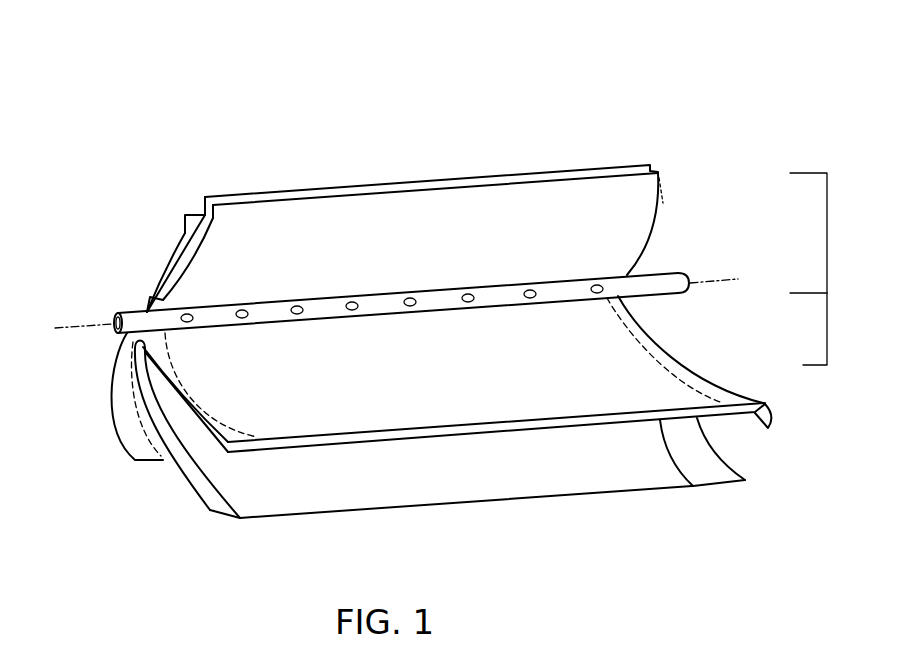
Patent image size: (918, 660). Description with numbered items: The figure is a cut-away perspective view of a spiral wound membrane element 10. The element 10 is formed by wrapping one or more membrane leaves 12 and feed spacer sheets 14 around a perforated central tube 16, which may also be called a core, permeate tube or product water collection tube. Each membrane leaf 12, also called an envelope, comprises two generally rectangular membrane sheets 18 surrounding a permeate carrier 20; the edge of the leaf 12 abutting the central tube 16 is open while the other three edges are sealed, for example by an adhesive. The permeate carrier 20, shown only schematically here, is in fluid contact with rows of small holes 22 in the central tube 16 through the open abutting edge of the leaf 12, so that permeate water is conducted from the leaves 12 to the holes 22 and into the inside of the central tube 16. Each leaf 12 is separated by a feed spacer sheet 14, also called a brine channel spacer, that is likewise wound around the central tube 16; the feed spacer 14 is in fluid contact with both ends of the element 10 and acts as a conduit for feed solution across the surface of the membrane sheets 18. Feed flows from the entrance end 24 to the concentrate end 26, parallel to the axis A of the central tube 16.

The spiral wound membrane element 10 is at (517, 105).
The membrane leaf 12 is at (827, 268).
The feed spacer sheet 14 is at (302, 192).
The central tube 16 is at (333, 305).
The membrane sheet 18 is at (650, 203).
The permeate carrier 20 is at (122, 382).
The holes 22 is at (243, 308).
The entrance end 24 is at (176, 236).
The concentrate end 26 is at (658, 218).
The axis A is at (62, 320).